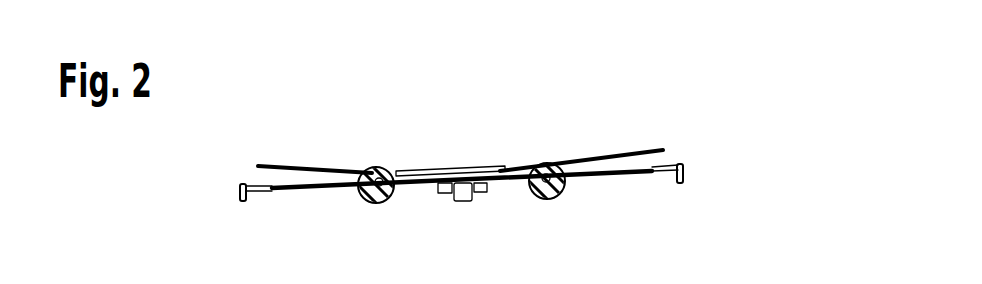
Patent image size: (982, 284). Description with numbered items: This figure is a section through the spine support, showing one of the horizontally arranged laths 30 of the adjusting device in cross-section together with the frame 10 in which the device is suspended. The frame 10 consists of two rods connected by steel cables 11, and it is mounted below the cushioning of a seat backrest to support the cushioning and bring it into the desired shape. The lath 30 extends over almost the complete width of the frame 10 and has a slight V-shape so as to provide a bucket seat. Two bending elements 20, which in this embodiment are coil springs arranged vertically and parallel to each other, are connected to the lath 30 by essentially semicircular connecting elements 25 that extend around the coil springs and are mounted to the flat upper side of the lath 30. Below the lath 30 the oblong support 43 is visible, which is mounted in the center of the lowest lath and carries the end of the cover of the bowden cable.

The frame 10 is at (241, 186).
The steel cable 11 is at (617, 173).
The bending element 20 is at (379, 170).
The connecting element 25 is at (360, 207).
The lath 30 is at (292, 166).
The oblong support 43 is at (464, 200).